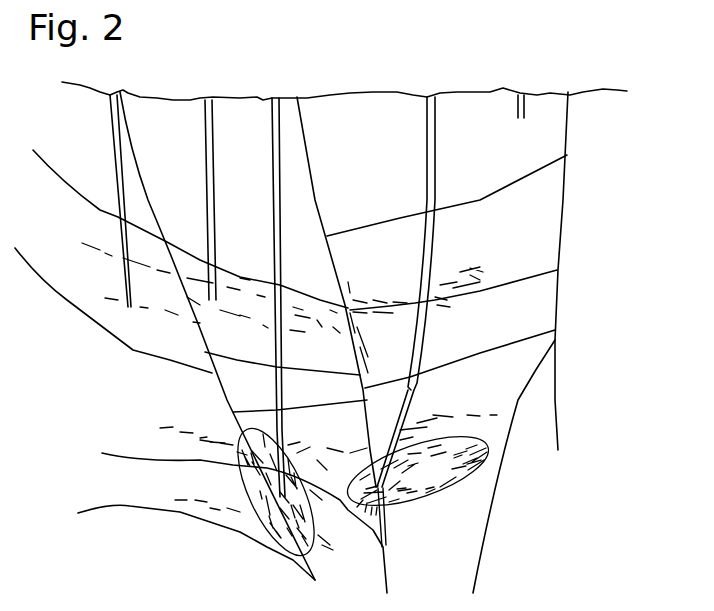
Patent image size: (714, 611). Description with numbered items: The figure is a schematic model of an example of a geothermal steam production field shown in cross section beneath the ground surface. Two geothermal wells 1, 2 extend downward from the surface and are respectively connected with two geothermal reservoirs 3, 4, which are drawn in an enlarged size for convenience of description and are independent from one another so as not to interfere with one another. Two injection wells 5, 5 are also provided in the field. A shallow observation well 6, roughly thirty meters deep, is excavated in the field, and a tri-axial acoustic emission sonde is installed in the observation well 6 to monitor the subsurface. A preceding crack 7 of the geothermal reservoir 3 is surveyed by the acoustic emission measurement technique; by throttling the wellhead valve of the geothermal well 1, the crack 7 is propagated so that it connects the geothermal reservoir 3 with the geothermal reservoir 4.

The geothermal well 1 is at (437, 117).
The geothermal well 2 is at (283, 127).
The geothermal reservoir 3 is at (427, 503).
The geothermal reservoir 4 is at (288, 540).
The injection well 5 is at (118, 115).
The observation well 6 is at (528, 107).
The preceding crack 7 is at (357, 513).